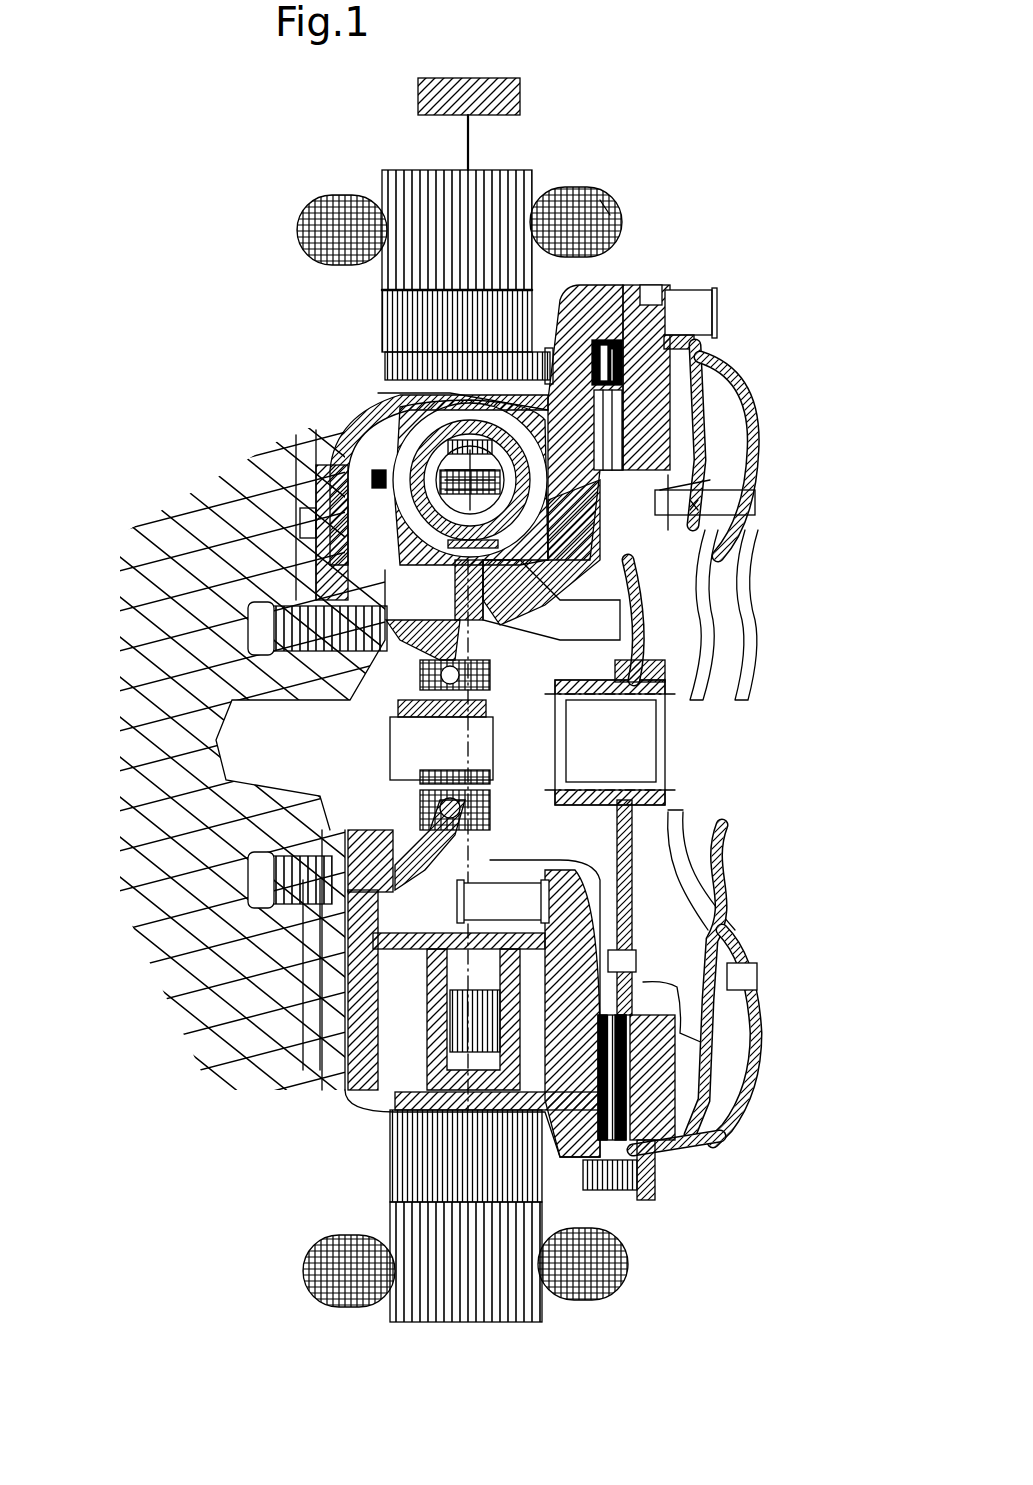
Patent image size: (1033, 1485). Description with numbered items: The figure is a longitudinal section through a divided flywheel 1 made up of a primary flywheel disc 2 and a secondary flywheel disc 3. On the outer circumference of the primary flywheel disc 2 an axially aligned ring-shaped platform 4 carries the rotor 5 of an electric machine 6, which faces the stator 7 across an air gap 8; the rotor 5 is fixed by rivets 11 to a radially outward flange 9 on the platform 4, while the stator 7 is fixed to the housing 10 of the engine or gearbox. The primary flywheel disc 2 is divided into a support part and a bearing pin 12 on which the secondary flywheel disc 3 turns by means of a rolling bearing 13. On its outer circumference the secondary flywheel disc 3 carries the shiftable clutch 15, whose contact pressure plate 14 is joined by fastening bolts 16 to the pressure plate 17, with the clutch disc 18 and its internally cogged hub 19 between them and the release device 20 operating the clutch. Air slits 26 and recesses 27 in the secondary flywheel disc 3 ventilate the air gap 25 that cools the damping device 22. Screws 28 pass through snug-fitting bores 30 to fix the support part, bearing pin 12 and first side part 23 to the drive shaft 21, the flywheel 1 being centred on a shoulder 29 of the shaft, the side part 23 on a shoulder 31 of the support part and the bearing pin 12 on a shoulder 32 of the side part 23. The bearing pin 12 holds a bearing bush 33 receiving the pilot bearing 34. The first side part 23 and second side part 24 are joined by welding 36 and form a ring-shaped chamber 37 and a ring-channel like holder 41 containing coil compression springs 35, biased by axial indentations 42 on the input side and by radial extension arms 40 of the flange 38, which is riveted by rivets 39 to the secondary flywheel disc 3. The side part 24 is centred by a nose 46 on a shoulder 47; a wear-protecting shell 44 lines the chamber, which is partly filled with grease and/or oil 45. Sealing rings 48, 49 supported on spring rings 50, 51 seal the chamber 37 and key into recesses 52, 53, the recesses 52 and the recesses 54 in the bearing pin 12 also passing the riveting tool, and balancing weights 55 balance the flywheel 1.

The divided flywheel 1 is at (700, 195).
The primary flywheel disc 2 is at (302, 592).
The secondary flywheel disc 3 is at (700, 512).
The ring-shaped platform 4 is at (422, 340).
The rotor 5 is at (432, 326).
The electric machine 6 is at (322, 162).
The stator 7 is at (425, 178).
The air gap 8 is at (332, 208).
The flange 9 is at (600, 200).
The housing 10 is at (505, 95).
The rivets 11 is at (462, 386).
The bearing pin 12 is at (262, 902).
The rolling bearing 13 is at (492, 812).
The contact pressure plate 14 is at (650, 290).
The shiftable clutch 15 is at (757, 335).
The fastening bolts 16 is at (700, 305).
The pressure plate 17 is at (700, 395).
The clutch disc 18 is at (650, 578).
The internally cogged hub 19 is at (665, 688).
The release device 20 is at (452, 468).
The drive shaft 21 is at (347, 972).
The damping device 22 is at (302, 524).
The first side part 23 is at (375, 472).
The second side part 24 is at (716, 335).
The air gap 25 is at (565, 335).
The air slits 26 is at (745, 432).
The recesses 27 is at (607, 600).
The screws 28 is at (545, 627).
The shoulder of the drive shaft 29 is at (282, 812).
The snug-fitting bores 30 is at (255, 667).
The shoulder of the support part 31 is at (245, 702).
The shoulder of the side part 32 is at (335, 702).
The bearing bush 33 is at (410, 732).
The pilot bearing 34 is at (470, 782).
The coil compression springs 35 is at (292, 447).
The welding 36 is at (552, 300).
The ring-shaped chamber 37 is at (302, 470).
The flange 38 is at (600, 978).
The rivets 39 is at (515, 895).
The radial extension arms 40 is at (306, 508).
The ring-channel like holder 41 is at (242, 455).
The axial indentations 42 is at (387, 1102).
The wear-protecting shell 44 is at (398, 470).
The grease and/or oil 45 is at (392, 1192).
The nose 46 is at (692, 290).
The shoulder 47 is at (392, 376).
The sealing ring 48 is at (388, 1006).
The sealing ring 49 is at (397, 1046).
The spring ring 50 is at (372, 992).
The spring ring 51 is at (382, 1052).
The recesses 52 is at (317, 962).
The recesses 53 is at (620, 932).
The recesses 54 is at (266, 936).
The balancing weights 55 is at (312, 556).